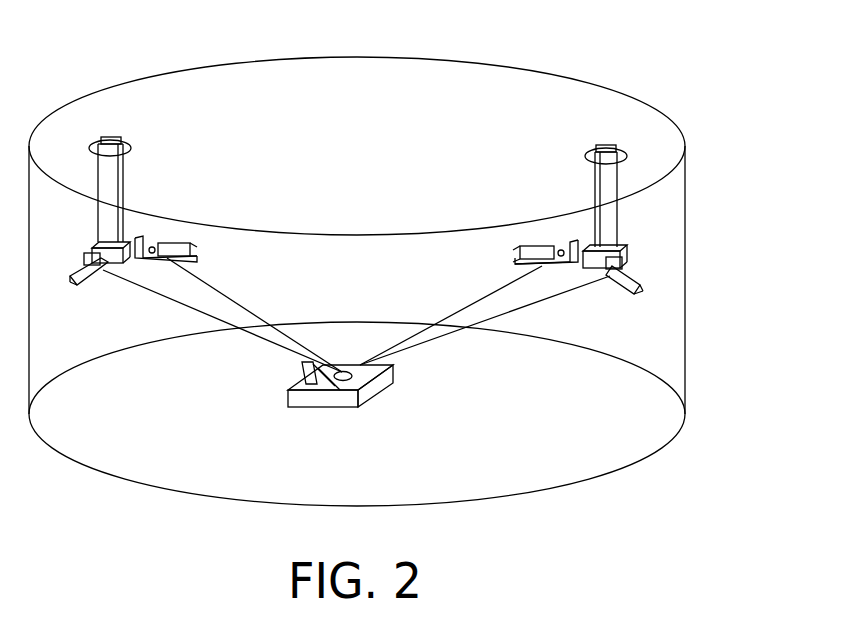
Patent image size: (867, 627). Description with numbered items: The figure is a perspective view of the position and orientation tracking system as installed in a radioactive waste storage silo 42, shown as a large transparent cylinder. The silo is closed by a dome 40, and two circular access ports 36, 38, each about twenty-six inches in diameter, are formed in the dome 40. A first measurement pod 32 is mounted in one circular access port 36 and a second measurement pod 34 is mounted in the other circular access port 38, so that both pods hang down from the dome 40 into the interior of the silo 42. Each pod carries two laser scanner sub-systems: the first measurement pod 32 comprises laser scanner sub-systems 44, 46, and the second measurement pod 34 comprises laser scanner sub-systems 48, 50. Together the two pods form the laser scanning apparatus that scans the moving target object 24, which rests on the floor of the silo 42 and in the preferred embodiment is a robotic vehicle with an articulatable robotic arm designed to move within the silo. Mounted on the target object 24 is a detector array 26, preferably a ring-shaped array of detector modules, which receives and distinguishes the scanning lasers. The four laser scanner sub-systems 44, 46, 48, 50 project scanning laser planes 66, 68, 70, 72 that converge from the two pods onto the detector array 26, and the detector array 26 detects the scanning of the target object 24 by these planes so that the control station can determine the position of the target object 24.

The moving target object 24 is at (347, 405).
The detector array 26 is at (368, 377).
The first measurement pod 32 is at (147, 223).
The second measurement pod 34 is at (593, 219).
The circular access port 36 is at (106, 136).
The circular access port 38 is at (590, 150).
The dome 40 is at (322, 72).
The radioactive waste storage silo 42 is at (733, 343).
The laser scanner sub-system 44 is at (78, 292).
The laser scanner sub-system 46 is at (193, 248).
The laser scanner sub-system 48 is at (517, 262).
The laser scanner sub-system 50 is at (623, 296).
The scanning laser plane 66 is at (262, 338).
The scanning laser plane 68 is at (252, 312).
The scanning laser plane 70 is at (453, 314).
The scanning laser plane 72 is at (447, 336).